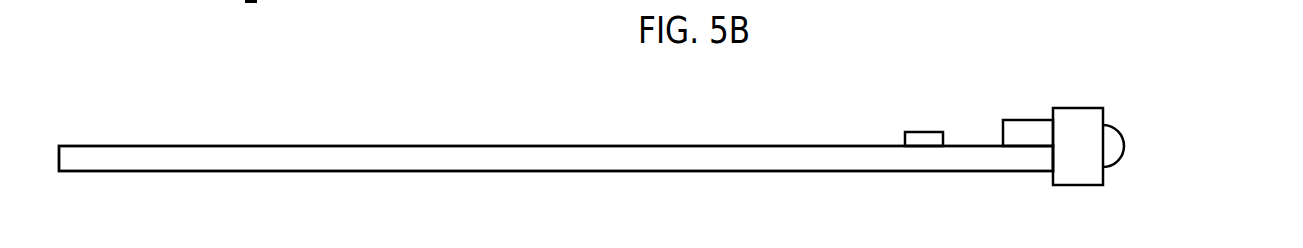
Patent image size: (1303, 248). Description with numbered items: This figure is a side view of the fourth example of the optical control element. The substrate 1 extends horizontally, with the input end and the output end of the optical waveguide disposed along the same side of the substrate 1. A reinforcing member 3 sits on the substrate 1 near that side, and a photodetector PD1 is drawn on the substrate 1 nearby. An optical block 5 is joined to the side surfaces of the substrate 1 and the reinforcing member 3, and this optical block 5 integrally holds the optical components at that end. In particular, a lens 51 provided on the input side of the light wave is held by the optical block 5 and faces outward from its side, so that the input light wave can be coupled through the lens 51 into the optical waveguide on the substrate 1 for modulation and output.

The substrate 1 is at (728, 160).
The photodetector PD1 (PD2) PD1 is at (922, 142).
The reinforcing member 3 is at (1028, 133).
The optical block 5 is at (1078, 165).
The lens 51 is at (1118, 140).